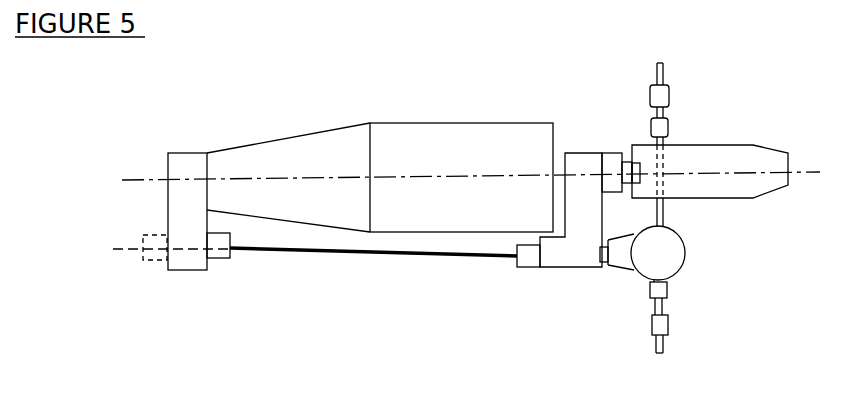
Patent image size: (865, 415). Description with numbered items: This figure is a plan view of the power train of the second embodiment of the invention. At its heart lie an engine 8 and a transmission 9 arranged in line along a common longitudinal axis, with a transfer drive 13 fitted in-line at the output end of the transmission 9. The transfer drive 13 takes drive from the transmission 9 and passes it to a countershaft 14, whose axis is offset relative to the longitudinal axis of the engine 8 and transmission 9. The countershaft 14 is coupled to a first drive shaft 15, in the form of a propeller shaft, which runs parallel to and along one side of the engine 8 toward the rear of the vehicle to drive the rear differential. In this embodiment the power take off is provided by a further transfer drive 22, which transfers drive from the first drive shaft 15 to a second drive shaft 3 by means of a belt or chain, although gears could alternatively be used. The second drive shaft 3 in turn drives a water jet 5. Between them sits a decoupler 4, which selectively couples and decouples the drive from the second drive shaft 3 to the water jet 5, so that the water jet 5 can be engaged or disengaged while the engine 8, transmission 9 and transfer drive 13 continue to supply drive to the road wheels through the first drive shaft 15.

The second drive shaft 3 is at (627, 163).
The decoupler 4 is at (636, 152).
The water jet 5 is at (726, 195).
The engine 8 is at (450, 167).
The transmission 9 is at (331, 217).
The transfer drive 13 is at (176, 226).
The countershaft 14 is at (190, 247).
The first drive shaft 15 is at (382, 259).
The further transfer drive 22 is at (568, 250).